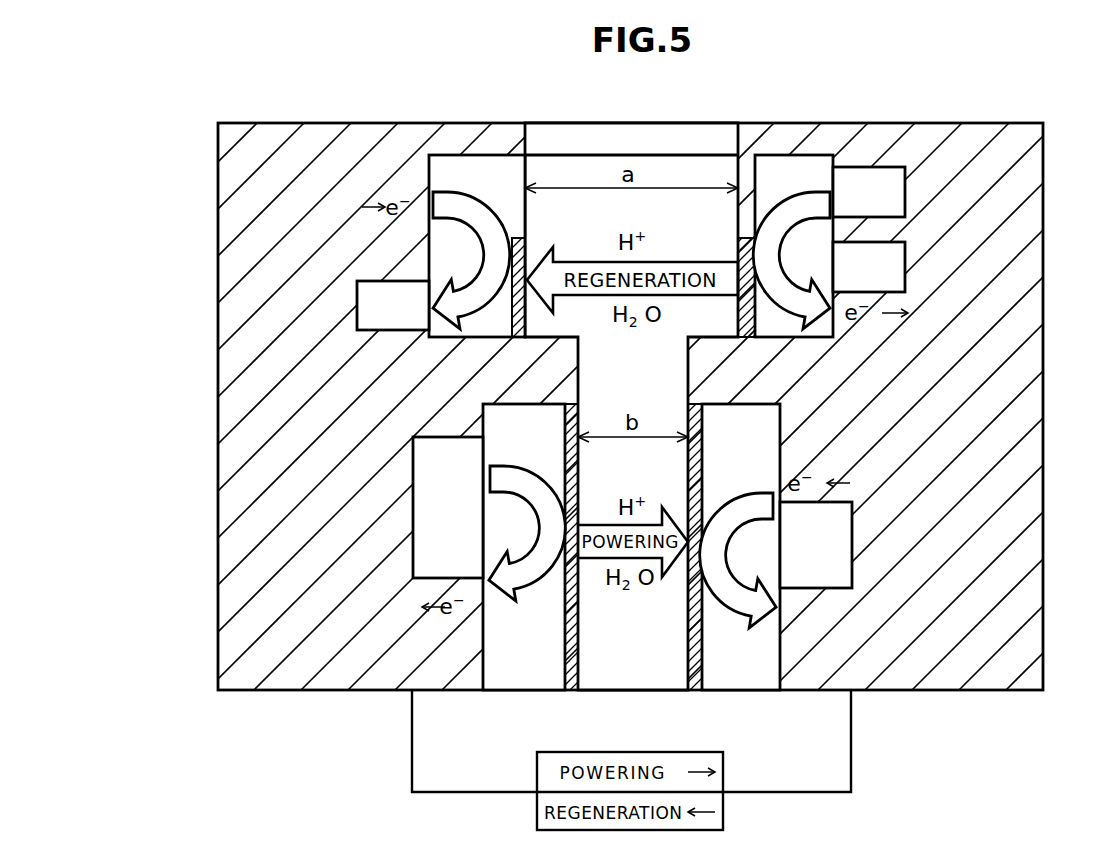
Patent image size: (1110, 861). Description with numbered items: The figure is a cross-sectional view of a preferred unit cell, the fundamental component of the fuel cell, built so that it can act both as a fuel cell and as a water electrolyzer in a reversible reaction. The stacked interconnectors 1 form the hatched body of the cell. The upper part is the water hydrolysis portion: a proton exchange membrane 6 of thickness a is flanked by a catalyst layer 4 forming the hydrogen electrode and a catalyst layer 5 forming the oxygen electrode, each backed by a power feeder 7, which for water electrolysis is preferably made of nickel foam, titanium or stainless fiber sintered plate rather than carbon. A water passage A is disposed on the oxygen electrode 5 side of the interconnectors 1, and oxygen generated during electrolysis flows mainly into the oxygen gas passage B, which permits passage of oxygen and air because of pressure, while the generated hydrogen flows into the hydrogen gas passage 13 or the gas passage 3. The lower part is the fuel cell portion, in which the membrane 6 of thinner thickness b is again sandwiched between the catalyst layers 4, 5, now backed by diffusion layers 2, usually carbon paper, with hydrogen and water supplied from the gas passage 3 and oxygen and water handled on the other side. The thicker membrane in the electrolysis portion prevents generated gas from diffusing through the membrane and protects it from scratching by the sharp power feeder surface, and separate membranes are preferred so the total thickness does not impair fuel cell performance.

The interconnector 1 is at (330, 123).
The diffusion layer 2 is at (512, 667).
The gas passage 3 is at (413, 512).
The catalyst layer (hydrogen electrode) 4 is at (510, 318).
The catalyst layer (oxygen electrode) 5 is at (756, 315).
The proton exchange membrane 6 is at (630, 155).
The power feeder 7 is at (474, 155).
The hydrogen gas passage 13 is at (357, 300).
The water passage A is at (905, 195).
The oxygen gas passage B is at (905, 272).